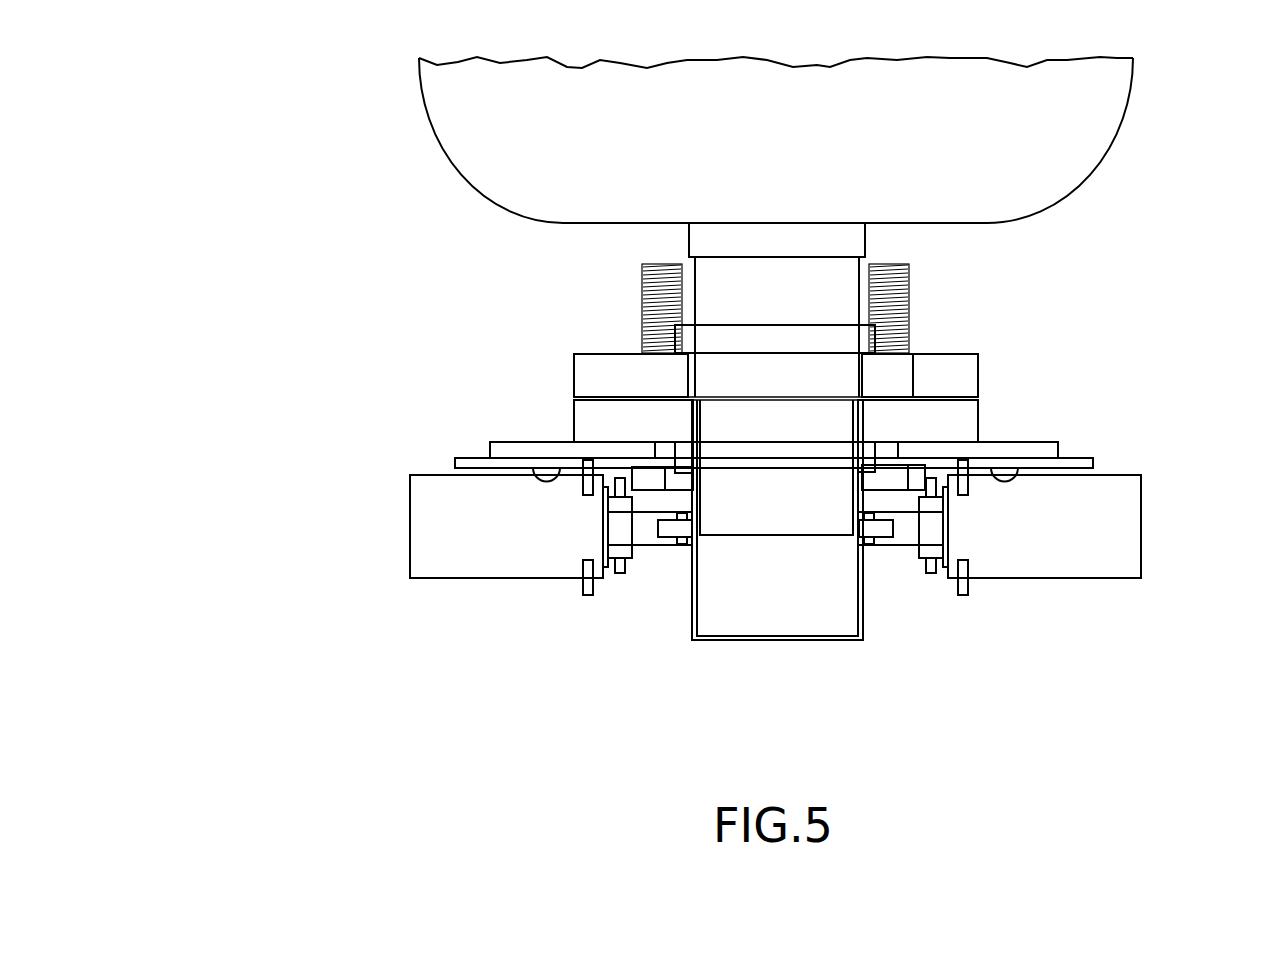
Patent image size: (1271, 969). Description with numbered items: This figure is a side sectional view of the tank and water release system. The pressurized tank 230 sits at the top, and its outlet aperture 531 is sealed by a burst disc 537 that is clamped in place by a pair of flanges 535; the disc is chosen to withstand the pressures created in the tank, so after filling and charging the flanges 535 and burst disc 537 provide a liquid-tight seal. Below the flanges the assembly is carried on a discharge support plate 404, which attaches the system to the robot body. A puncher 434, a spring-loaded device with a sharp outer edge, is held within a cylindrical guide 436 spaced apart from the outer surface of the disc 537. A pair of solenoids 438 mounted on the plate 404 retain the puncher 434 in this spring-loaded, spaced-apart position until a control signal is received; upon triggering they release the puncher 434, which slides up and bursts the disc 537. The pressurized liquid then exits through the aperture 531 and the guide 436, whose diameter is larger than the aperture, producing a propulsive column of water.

The tank 230 is at (1121, 159).
The outlet aperture 531 is at (870, 370).
The flanges 535 is at (562, 418).
The burst disc 537 is at (848, 395).
The discharge support plate 404 is at (482, 446).
The solenoids 438 is at (401, 518).
The puncher 434 is at (773, 541).
The cylindrical guide 436 is at (871, 607).